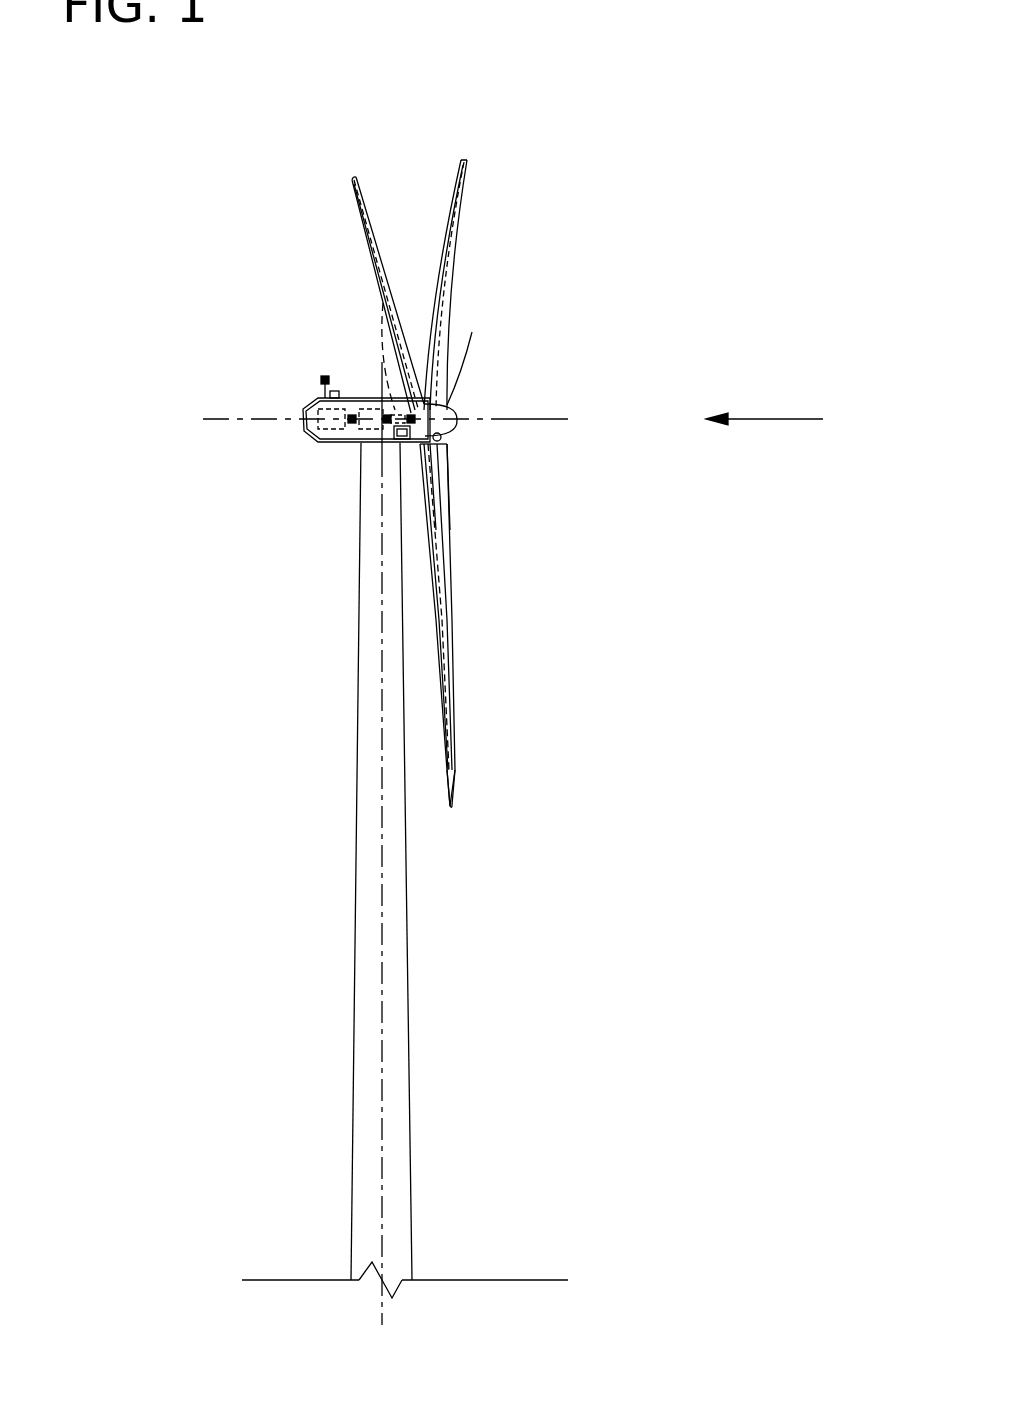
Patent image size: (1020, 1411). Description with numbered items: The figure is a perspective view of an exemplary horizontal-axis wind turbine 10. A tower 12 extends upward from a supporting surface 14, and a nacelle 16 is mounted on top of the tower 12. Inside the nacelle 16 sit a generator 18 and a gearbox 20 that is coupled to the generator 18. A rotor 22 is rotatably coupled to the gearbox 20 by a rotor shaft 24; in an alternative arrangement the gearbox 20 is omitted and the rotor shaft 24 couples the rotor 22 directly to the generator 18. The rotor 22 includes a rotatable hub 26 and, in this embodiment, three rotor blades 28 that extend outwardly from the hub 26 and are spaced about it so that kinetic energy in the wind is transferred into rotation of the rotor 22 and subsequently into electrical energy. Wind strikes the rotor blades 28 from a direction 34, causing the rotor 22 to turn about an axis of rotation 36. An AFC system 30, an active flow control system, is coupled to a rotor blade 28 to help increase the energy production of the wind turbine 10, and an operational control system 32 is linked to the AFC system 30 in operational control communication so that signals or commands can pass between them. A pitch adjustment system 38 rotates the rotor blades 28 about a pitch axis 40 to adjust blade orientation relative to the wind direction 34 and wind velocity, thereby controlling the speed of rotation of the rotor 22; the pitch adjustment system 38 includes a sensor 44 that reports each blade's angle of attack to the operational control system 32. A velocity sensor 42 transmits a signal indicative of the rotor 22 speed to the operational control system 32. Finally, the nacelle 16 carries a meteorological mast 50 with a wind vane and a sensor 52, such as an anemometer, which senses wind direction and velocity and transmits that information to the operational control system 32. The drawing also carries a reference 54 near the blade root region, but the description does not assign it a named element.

The wind turbine 10 is at (655, 115).
The tower 12 is at (355, 955).
The supporting surface 14 is at (458, 1280).
The nacelle 16 is at (334, 398).
The generator 18 is at (320, 442).
The gearbox 20 is at (352, 442).
The rotor 22 is at (490, 356).
The rotor shaft 24 is at (386, 480).
The hub 26 is at (455, 410).
The rotor blade 28 is at (372, 240).
The AFC system 30 is at (482, 490).
The operational control system 32 is at (413, 442).
The direction 34 is at (788, 418).
The axis of rotation 36 is at (540, 424).
The pitch adjustment system 38 is at (455, 438).
The pitch axis 40 is at (450, 682).
The velocity sensor 42 is at (368, 340).
The sensor 44 is at (470, 352).
The meteorological mast 50 is at (314, 345).
The sensor 52 is at (321, 380).
The blade root 54 is at (446, 525).